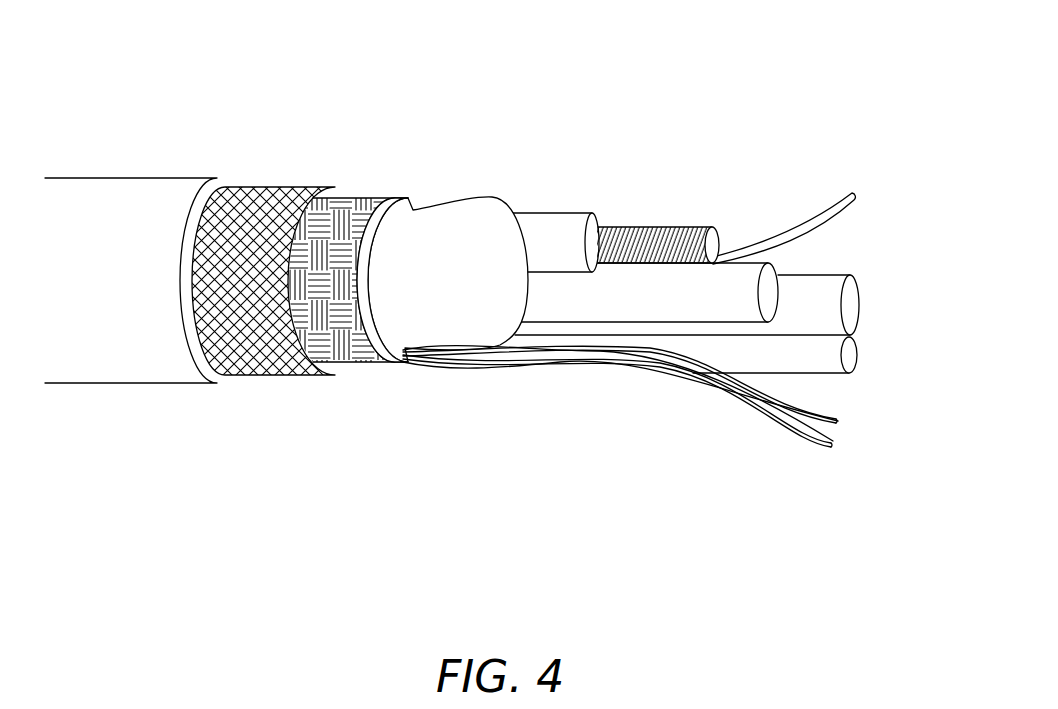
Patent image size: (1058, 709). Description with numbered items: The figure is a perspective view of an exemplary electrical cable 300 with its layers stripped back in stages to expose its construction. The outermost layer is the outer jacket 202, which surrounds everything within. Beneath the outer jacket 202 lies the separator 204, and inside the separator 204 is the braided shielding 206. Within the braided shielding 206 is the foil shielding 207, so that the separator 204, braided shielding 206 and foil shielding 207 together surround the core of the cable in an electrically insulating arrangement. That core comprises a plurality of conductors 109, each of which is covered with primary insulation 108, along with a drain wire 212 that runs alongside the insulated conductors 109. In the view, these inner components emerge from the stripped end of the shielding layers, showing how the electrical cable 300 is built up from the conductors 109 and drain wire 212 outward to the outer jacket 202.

The outer jacket 202 is at (170, 200).
The separator 204 is at (260, 203).
The braided shielding 206 is at (352, 208).
The foil shielding 207 is at (462, 227).
The primary insulation 108 is at (555, 232).
The conductors 109 is at (652, 237).
The drain wire 212 is at (590, 363).
The electrical cable 300 is at (658, 296).